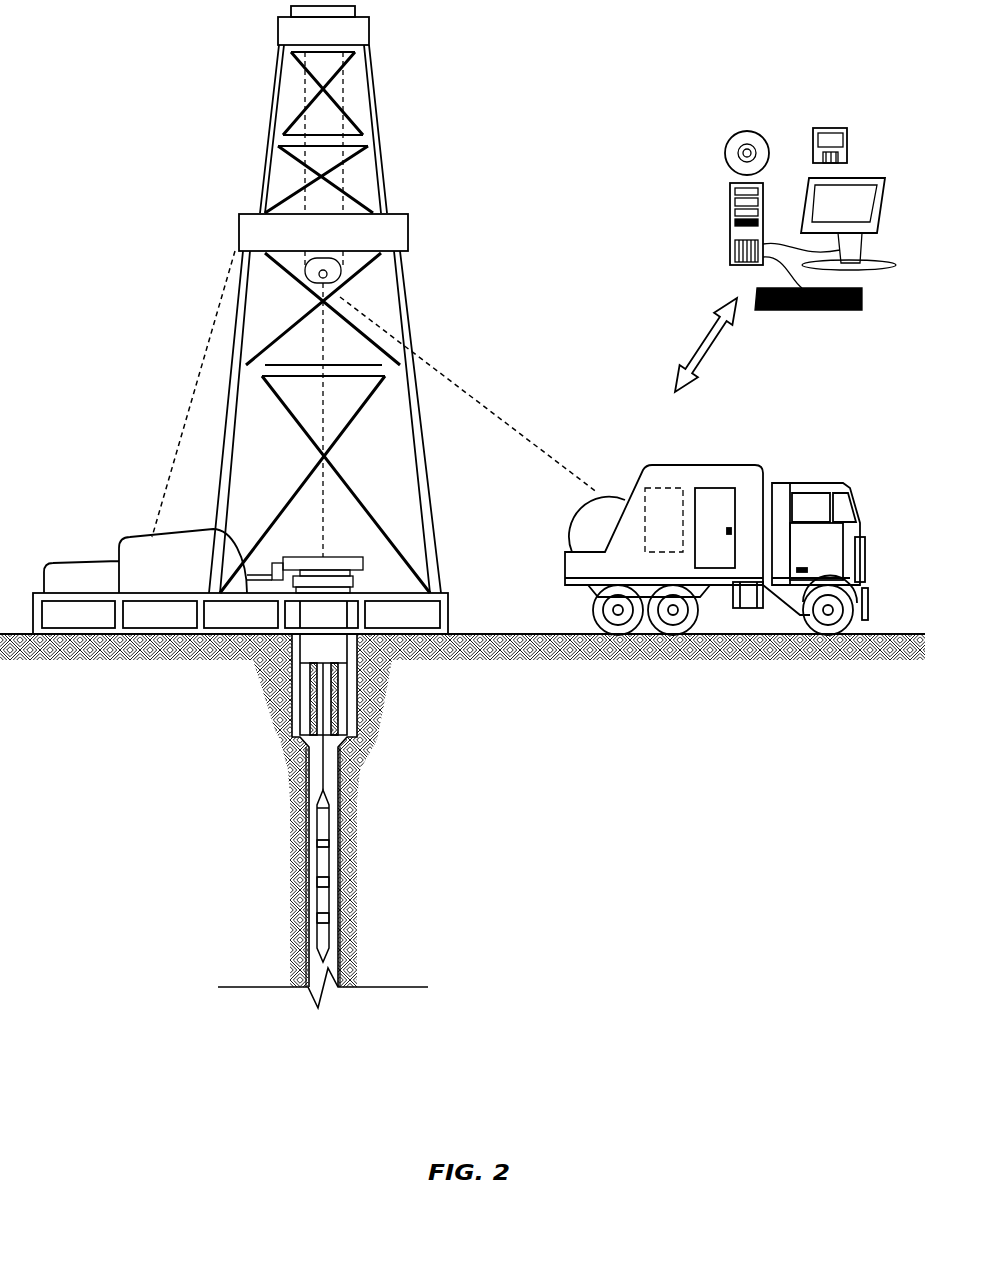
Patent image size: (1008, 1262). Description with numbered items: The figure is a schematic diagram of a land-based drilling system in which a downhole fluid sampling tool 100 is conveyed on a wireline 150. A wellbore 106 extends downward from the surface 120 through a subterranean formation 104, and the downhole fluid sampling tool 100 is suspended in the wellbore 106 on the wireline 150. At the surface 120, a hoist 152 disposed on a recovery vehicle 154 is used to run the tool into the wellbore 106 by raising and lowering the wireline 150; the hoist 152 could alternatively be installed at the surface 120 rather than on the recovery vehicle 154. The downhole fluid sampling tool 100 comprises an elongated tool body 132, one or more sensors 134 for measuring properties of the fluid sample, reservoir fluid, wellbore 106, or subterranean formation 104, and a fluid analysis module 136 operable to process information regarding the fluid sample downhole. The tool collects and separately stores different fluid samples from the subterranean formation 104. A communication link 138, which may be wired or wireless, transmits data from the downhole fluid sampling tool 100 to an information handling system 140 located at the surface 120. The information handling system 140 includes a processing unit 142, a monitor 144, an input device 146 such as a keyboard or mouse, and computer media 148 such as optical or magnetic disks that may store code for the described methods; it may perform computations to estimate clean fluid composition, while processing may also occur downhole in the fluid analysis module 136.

The downhole fluid sampling tool 100 is at (325, 876).
The subterranean formation 104 is at (528, 820).
The wellbore 106 is at (307, 813).
The surface 120 is at (876, 634).
The tool body 132 is at (318, 890).
The sensors 134 is at (330, 913).
The fluid analysis module 136 is at (306, 901).
The communication link 138 is at (713, 348).
The information handling system 140 is at (741, 224).
The processing unit 142 is at (730, 197).
The monitor 144 is at (863, 175).
The input device 146 is at (850, 312).
The computer media 148 is at (832, 128).
The wireline 150 is at (320, 762).
The hoist 152 is at (573, 518).
The recovery vehicle 154 is at (681, 525).